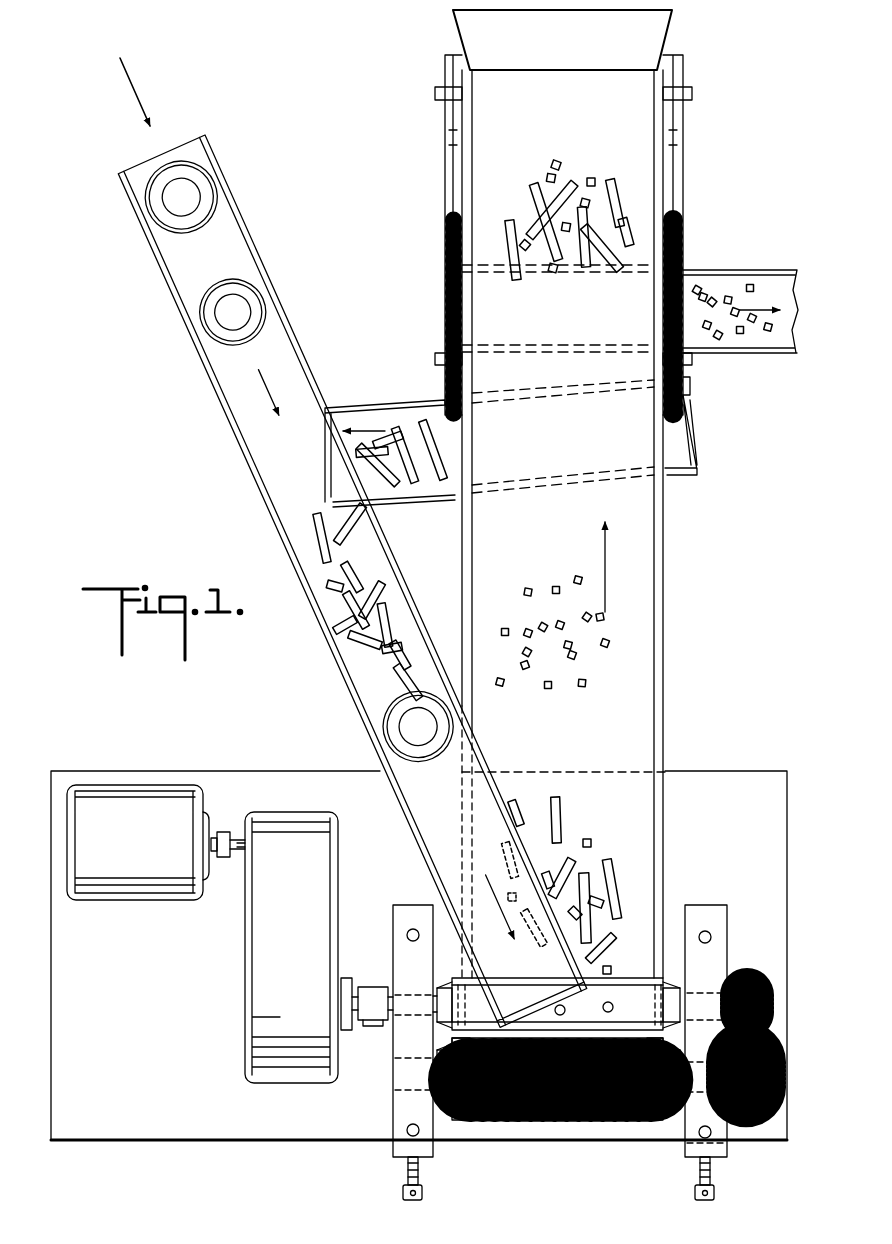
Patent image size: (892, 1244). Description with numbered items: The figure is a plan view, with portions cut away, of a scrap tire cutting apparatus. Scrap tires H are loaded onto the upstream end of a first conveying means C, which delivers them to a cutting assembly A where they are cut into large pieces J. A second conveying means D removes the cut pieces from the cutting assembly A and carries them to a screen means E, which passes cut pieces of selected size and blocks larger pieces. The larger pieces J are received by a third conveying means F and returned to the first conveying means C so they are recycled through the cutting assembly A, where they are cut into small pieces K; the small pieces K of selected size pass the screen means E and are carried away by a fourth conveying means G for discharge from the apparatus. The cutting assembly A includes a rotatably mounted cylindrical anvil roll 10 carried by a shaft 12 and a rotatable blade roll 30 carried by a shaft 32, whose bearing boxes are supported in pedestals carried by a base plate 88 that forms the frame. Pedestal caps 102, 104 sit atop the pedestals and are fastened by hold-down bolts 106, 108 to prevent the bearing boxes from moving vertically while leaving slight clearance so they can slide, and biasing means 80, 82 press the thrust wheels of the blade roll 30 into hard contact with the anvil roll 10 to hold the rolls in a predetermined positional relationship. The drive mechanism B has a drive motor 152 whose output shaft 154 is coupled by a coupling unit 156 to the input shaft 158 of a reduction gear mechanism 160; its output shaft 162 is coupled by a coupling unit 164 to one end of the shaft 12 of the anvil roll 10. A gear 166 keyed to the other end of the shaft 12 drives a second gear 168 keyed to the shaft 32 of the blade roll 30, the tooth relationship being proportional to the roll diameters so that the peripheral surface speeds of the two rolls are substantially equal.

The anvil roll 10 is at (629, 975).
The shaft 12 is at (392, 990).
The blade roll 30 is at (598, 1128).
The shaft 32 is at (434, 1057).
The biasing means 80 is at (394, 1167).
The biasing means 82 is at (690, 1168).
The base plate 88 is at (170, 1118).
The pedestal cap 102 is at (395, 1101).
The pedestal cap 104 is at (720, 928).
The hold-down bolts 106 is at (406, 930).
The hold-down bolts 108 is at (707, 931).
The drive motor 152 is at (108, 895).
The output shaft 154 is at (222, 830).
The coupling unit 156 is at (228, 858).
The input shaft 158 is at (236, 842).
The reduction gear mechanism 160 is at (245, 990).
The output shaft 162 is at (350, 980).
The coupling unit 164 is at (370, 1024).
The gear 166 is at (750, 977).
The second gear 168 is at (750, 1120).
The cutting assembly A is at (558, 1062).
The drive mechanism B is at (438, 985).
The first conveying means C is at (352, 581).
The second conveying means D is at (676, 759).
The screen means E is at (428, 217).
The third conveying means F is at (422, 388).
The fourth conveying means G is at (760, 264).
The scrap tires H is at (206, 282).
The large pieces J is at (370, 556).
The small pieces K is at (612, 661).